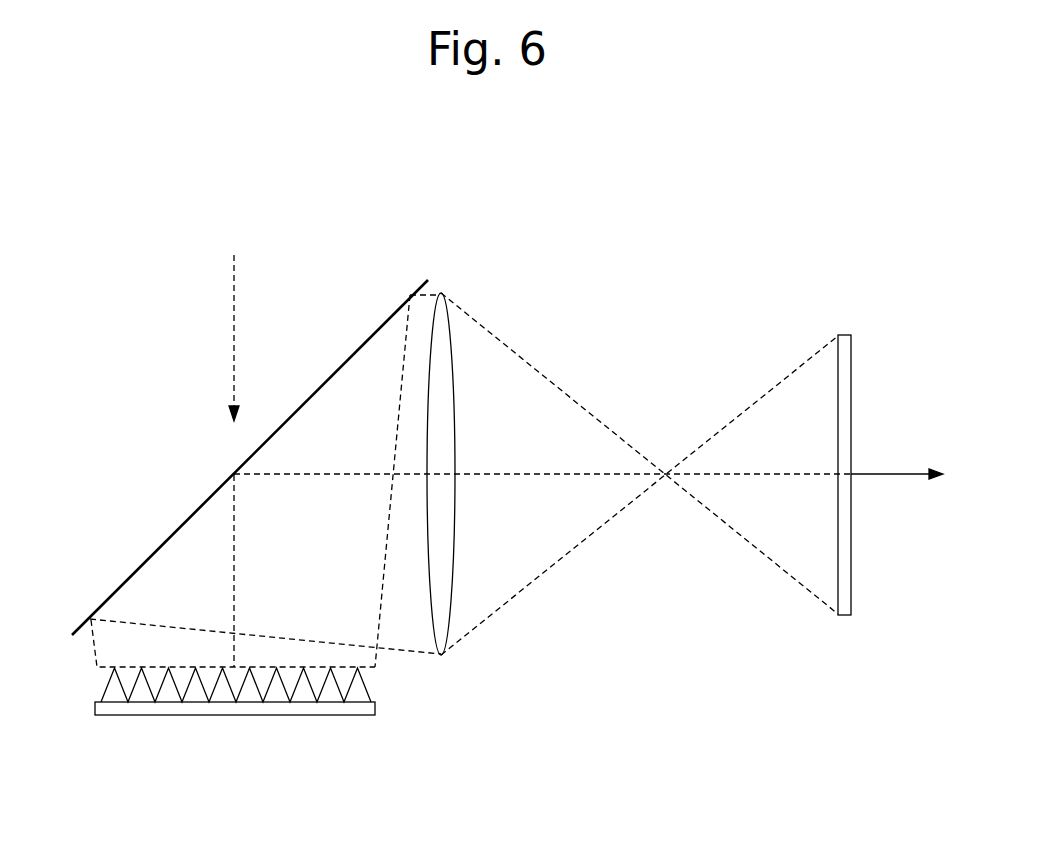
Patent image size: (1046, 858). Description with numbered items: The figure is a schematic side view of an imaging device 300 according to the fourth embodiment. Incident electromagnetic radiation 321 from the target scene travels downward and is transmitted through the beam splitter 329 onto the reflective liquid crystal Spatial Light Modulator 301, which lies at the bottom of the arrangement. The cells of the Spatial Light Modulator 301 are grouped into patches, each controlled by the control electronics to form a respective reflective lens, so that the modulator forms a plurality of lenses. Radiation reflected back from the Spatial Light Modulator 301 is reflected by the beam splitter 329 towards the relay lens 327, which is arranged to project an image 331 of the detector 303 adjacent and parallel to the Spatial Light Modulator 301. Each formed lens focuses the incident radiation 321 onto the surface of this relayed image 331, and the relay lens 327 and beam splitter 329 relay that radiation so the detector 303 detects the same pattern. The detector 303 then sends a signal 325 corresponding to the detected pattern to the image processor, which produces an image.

The imaging device 300 is at (122, 233).
The reflective liquid crystal Spatial Light Modulator 301 is at (158, 716).
The detector 303 is at (852, 585).
The incident electromagnetic radiation 321 is at (233, 345).
The signal 325 is at (892, 472).
The relay lens 327 is at (443, 322).
The beam splitter 329 is at (377, 328).
The image of the detector 331 is at (370, 668).